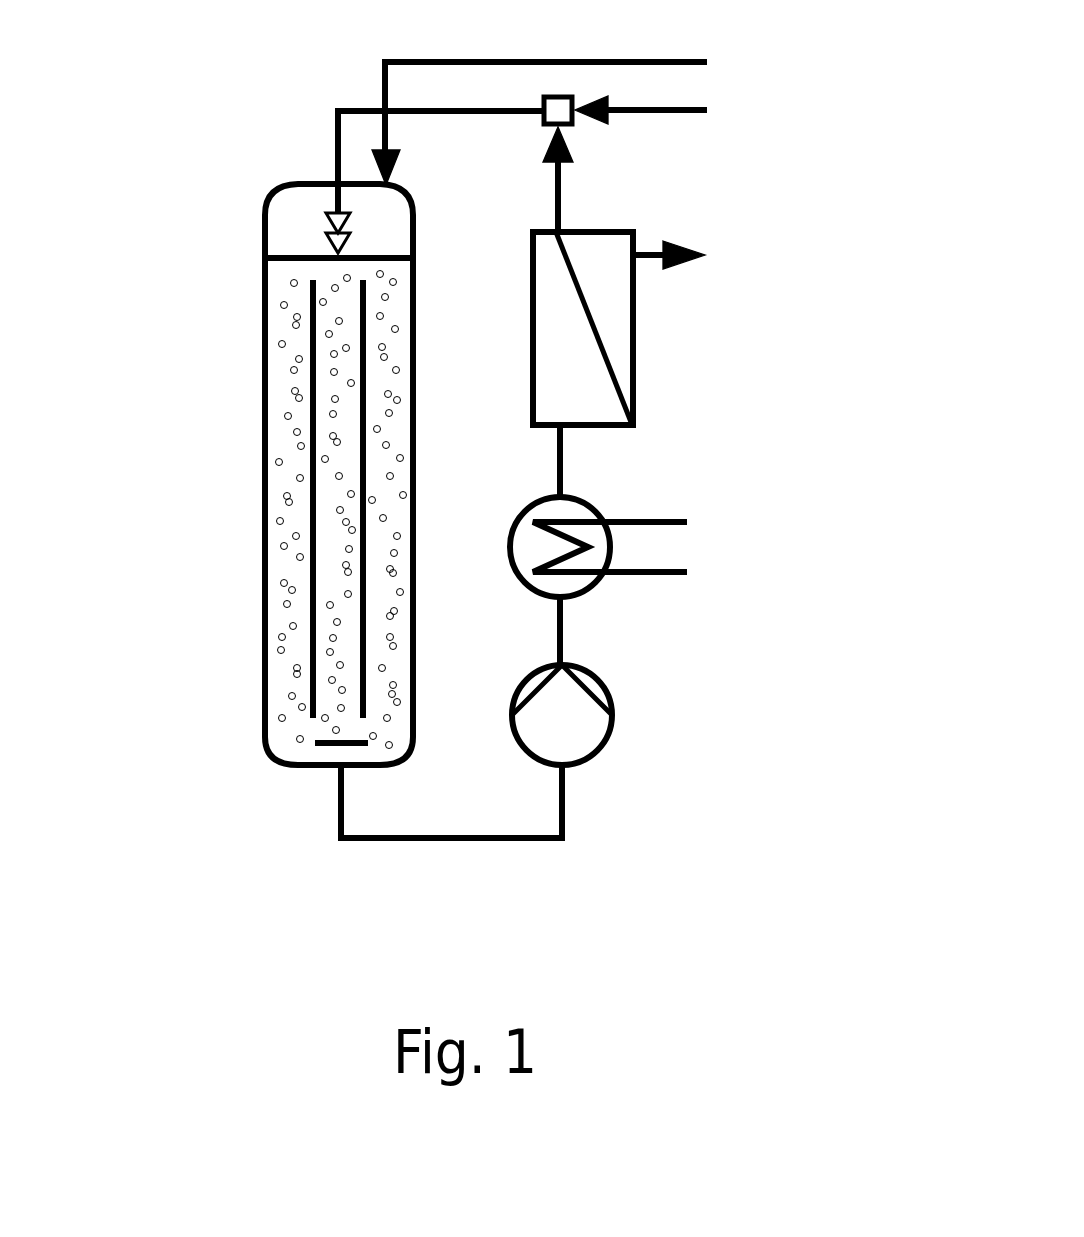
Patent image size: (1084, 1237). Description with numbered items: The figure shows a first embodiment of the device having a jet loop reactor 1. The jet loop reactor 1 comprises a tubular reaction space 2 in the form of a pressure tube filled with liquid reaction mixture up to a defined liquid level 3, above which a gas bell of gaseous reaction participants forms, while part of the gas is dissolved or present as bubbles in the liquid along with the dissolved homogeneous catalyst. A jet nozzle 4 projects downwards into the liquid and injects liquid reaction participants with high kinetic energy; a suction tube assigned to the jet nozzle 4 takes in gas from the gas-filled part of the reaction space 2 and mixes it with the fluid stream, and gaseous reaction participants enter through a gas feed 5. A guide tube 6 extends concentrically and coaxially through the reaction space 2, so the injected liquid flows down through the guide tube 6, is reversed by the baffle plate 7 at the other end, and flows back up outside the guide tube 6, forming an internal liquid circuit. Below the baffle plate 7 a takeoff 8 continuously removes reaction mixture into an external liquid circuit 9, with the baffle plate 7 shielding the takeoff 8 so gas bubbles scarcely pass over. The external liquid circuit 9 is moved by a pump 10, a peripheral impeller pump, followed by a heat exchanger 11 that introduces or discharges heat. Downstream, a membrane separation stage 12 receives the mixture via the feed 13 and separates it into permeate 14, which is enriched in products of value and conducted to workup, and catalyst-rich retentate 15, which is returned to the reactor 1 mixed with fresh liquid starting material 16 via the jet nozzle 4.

The jet loop reactor 1 is at (240, 267).
The tubular reaction space 2 is at (265, 360).
The liquid level 3 is at (292, 253).
The jet nozzle 4 is at (328, 231).
The gas feed 5 is at (365, 167).
The guide tube 6 is at (313, 498).
The baffle plate 7 is at (302, 742).
The takeoff 8 is at (332, 772).
The external liquid circuit 9 is at (452, 390).
The pump 10 is at (633, 722).
The heat exchanger 11 is at (682, 547).
The membrane separation stage 12 is at (667, 372).
The feed 13 is at (560, 469).
The permeate 14 is at (657, 267).
The retentate 15 is at (558, 178).
The fresh liquid starting material 16 is at (657, 110).